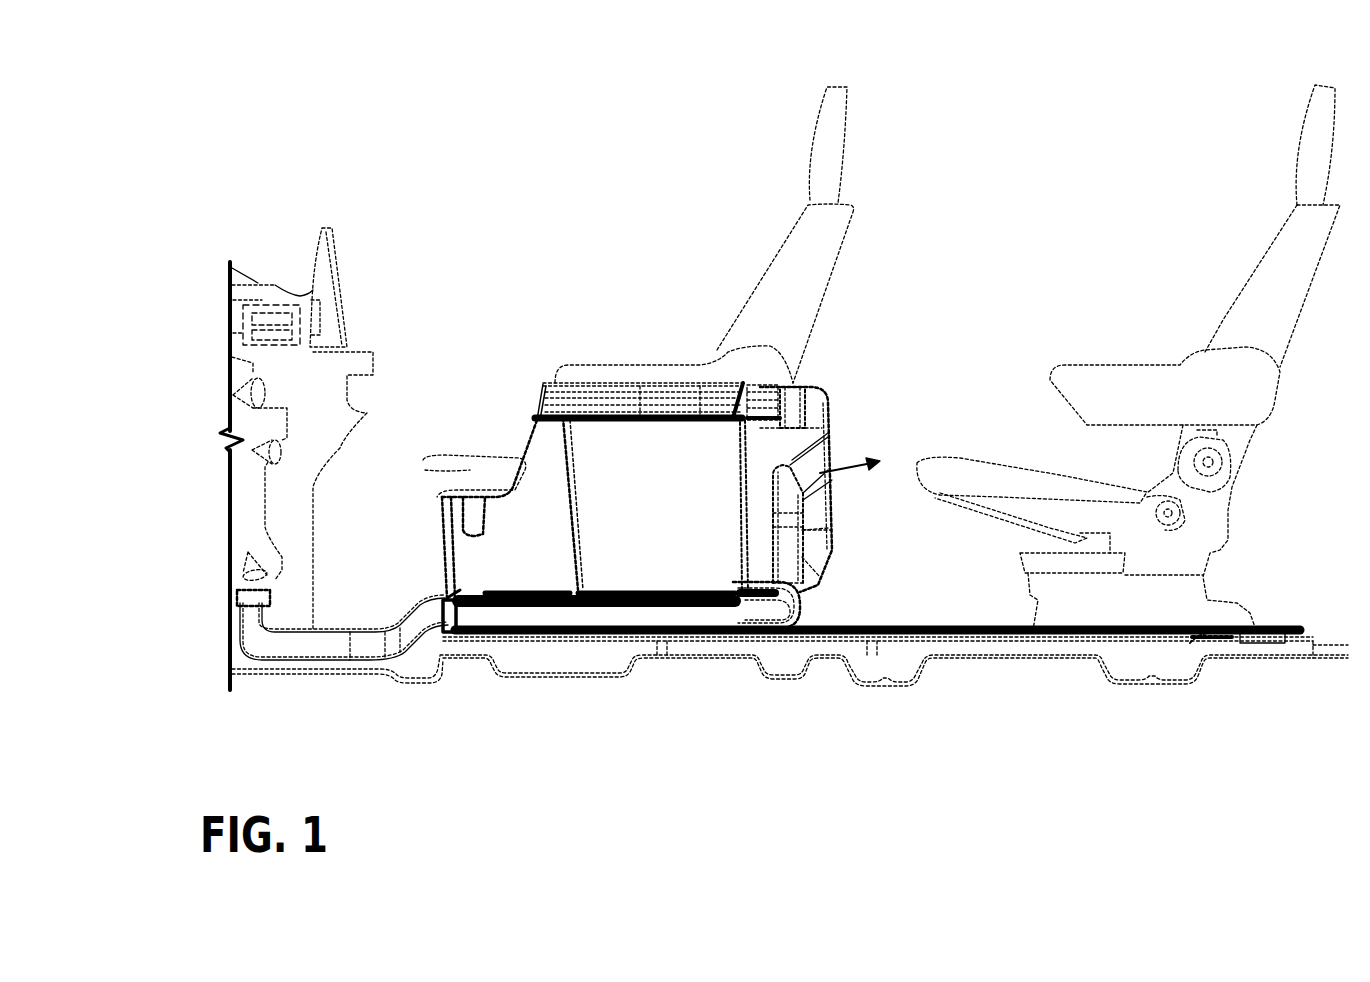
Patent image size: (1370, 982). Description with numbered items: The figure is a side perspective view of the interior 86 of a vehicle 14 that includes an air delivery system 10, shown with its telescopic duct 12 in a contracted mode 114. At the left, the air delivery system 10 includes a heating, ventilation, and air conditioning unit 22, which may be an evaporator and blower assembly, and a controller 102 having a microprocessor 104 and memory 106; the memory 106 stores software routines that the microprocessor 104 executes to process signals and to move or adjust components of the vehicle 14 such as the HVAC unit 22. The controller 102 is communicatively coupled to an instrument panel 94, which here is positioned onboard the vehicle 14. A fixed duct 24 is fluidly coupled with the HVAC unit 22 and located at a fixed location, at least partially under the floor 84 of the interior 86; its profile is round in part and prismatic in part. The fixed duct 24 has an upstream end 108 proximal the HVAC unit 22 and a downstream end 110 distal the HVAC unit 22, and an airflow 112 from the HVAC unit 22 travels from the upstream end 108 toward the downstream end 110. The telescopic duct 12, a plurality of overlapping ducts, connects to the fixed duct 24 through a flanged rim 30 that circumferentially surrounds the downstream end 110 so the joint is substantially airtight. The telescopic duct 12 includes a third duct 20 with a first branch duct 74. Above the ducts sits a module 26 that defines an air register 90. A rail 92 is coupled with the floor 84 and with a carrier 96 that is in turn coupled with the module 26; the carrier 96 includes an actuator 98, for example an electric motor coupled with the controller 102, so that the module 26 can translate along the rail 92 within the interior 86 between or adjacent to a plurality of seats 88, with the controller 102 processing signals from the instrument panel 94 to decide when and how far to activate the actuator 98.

The air delivery system 10 is at (532, 228).
The telescopic duct 12 is at (1004, 350).
The vehicle 14 is at (204, 156).
The third duct 20 is at (797, 618).
The heating, ventilation, and air conditioning unit 22 is at (250, 488).
The fixed duct 24 is at (296, 650).
The module 26 is at (820, 388).
The flanged rim 30 is at (447, 600).
The first branch duct 74 is at (803, 530).
The floor 84 is at (933, 627).
The interior 86 is at (693, 305).
The seats 88 is at (1161, 342).
The air register 90 is at (820, 450).
The rail 92 is at (597, 650).
The instrument panel 94 is at (342, 268).
The carrier 96 is at (465, 640).
The actuator 98 is at (500, 640).
The controller 102 is at (275, 290).
The microprocessor 104 is at (227, 300).
The memory 106 is at (243, 333).
The upstream end 108 is at (233, 593).
The downstream end 110 is at (443, 597).
The airflow 112 is at (842, 470).
The contracted mode 114 is at (742, 641).